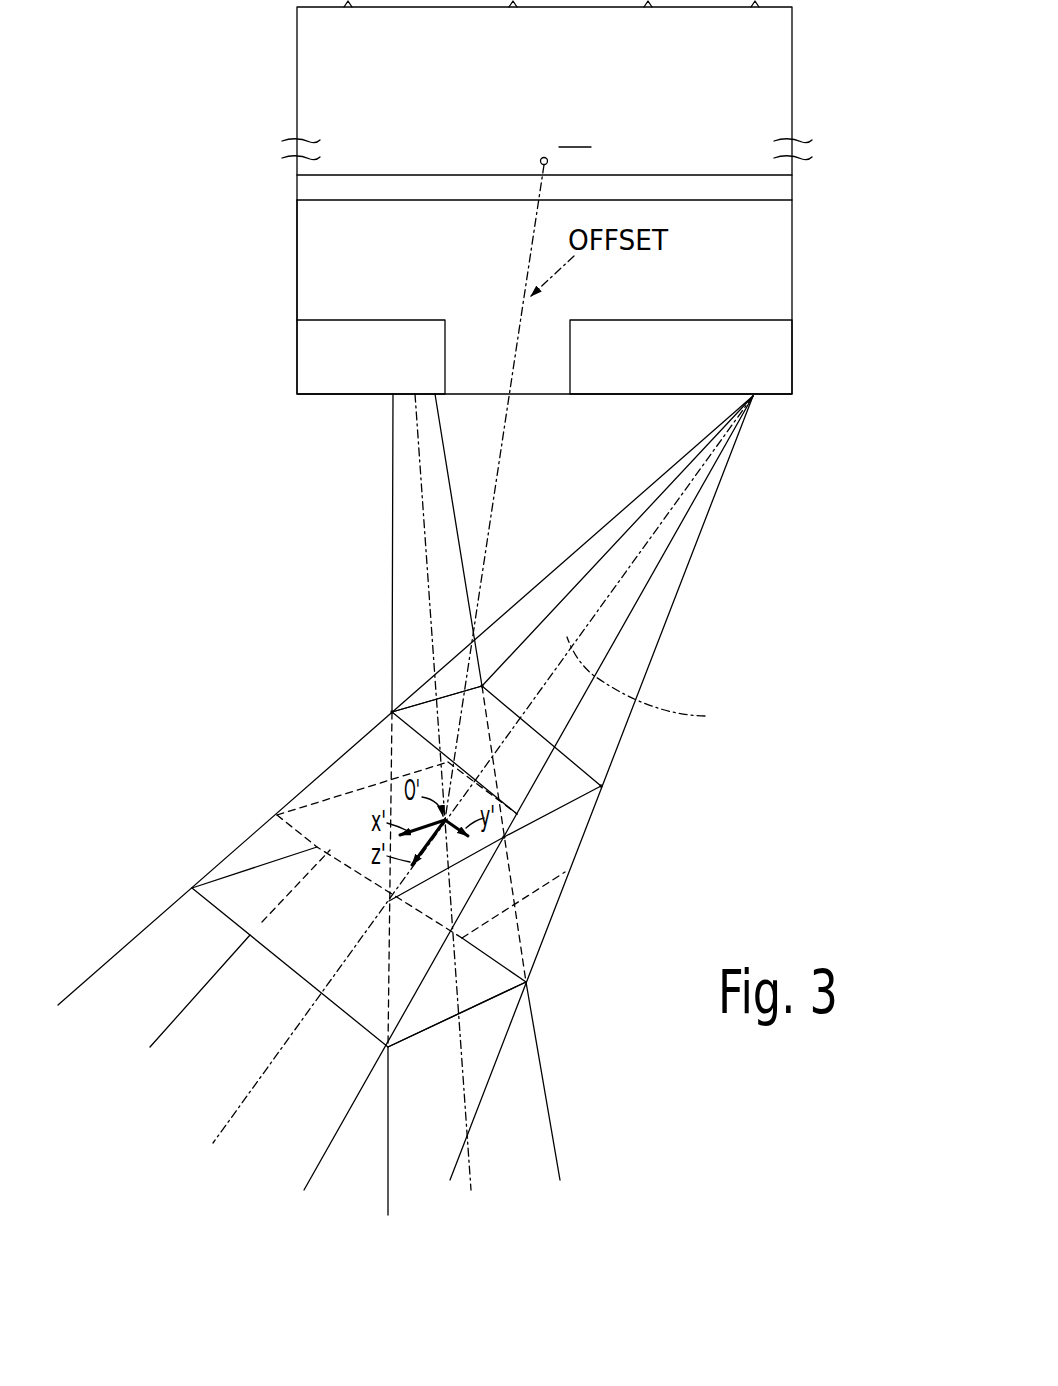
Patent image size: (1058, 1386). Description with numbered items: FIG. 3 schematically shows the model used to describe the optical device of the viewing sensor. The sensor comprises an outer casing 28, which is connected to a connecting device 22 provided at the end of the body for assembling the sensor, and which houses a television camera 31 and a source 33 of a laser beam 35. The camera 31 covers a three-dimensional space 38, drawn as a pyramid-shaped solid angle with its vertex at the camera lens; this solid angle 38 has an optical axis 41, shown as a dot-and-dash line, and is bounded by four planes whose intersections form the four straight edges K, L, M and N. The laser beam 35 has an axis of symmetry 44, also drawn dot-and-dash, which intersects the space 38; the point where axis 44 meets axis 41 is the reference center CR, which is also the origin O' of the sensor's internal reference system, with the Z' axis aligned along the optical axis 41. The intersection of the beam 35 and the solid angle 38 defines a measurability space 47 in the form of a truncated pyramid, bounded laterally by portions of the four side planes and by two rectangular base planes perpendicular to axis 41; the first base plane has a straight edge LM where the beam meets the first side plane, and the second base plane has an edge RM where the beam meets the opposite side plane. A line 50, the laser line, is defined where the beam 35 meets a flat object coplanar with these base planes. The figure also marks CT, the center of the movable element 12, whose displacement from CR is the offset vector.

The movable element 12 is at (795, 127).
The connecting device 22 is at (305, 188).
The outer casing 28 is at (295, 291).
The television camera 31 is at (782, 352).
The source of a laser beam 33 is at (321, 378).
The laser beam 35 is at (390, 565).
The three-dimensional space 38 is at (656, 677).
The optical axis 41 is at (653, 687).
The axis of symmetry 44 is at (424, 605).
The measurability space 47 is at (283, 798).
The line 50 is at (398, 897).